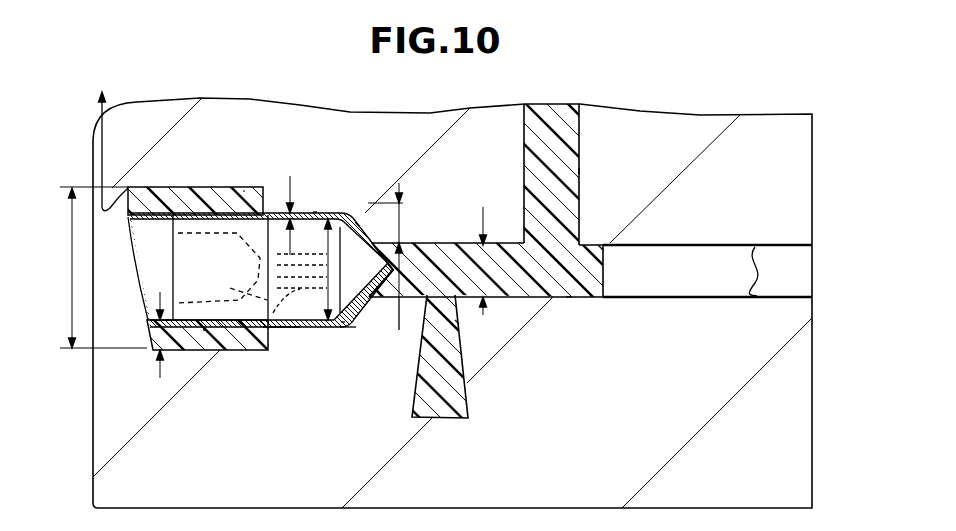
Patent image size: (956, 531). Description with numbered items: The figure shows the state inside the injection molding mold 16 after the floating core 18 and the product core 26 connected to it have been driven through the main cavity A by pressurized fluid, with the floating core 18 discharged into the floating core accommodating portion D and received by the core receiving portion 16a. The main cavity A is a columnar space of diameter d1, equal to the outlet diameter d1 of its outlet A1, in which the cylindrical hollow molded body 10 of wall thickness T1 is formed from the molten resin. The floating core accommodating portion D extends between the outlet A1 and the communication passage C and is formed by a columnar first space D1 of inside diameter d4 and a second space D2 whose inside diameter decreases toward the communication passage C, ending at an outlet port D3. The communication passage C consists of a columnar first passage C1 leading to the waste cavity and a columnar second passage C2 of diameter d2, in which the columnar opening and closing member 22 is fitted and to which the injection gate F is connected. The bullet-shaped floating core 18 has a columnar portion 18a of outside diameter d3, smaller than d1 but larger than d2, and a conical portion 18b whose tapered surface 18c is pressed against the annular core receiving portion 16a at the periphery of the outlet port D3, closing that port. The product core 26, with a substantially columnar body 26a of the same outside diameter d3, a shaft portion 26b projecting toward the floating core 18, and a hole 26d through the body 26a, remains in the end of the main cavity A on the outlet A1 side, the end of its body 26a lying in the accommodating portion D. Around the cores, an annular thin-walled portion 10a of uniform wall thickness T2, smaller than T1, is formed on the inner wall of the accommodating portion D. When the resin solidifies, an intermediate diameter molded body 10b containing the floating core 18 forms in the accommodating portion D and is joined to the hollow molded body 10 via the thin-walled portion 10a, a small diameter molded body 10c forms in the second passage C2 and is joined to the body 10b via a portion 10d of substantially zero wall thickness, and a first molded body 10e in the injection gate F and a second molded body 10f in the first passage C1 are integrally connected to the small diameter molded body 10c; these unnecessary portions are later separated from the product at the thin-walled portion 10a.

The hollow molded body 10 is at (413, 282).
The thin-walled portion 10a is at (270, 330).
The intermediate diameter molded body 10b is at (350, 332).
The small diameter molded body 10c is at (418, 272).
The portion having a wall thickness of substantially zero 10d is at (373, 240).
The first molded body 10e is at (447, 357).
The second molded body 10f is at (566, 162).
The injection molding mold 16 is at (682, 128).
The core receiving portion 16a is at (399, 328).
The floating core 18 is at (261, 333).
The columnar portion 18a is at (310, 328).
The conical portion 18b is at (348, 327).
The tapered surface 18c is at (345, 232).
The opening and closing member 22 is at (692, 272).
The product core 26 is at (198, 301).
The body 26a is at (212, 350).
The shaft portion 26b is at (222, 268).
The hole 26d is at (206, 247).
The main cavity A is at (112, 141).
The outlet A1 is at (205, 330).
The communication passage C is at (594, 247).
The first passage C1 is at (572, 170).
The second passage C2 is at (569, 292).
The floating core accommodating portion D is at (263, 247).
The first space D1 is at (315, 212).
The second space D2 is at (343, 325).
The outlet port D3 is at (357, 224).
The diameter of the main cavity d1 is at (103, 267).
The diameter of the second passage d2 is at (487, 230).
The outside diameter of the columnar portion d3 is at (312, 269).
The inside diameter of the first space d4 is at (402, 229).
The wall thickness of the hollow molded body T1 is at (145, 345).
The wall thickness of the thin-walled portion T2 is at (284, 212).
The injection gate F is at (457, 322).